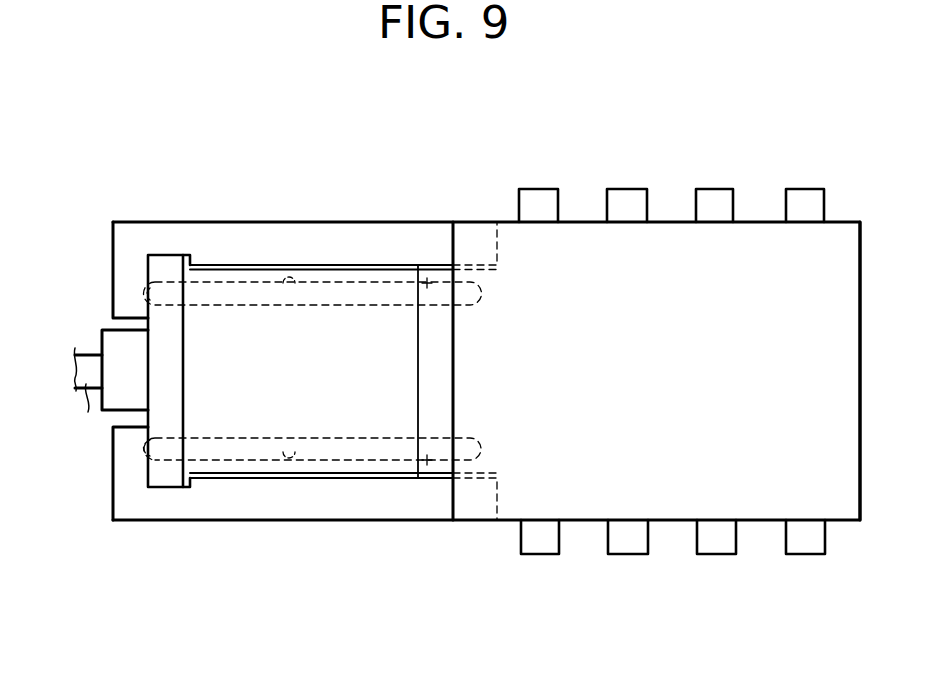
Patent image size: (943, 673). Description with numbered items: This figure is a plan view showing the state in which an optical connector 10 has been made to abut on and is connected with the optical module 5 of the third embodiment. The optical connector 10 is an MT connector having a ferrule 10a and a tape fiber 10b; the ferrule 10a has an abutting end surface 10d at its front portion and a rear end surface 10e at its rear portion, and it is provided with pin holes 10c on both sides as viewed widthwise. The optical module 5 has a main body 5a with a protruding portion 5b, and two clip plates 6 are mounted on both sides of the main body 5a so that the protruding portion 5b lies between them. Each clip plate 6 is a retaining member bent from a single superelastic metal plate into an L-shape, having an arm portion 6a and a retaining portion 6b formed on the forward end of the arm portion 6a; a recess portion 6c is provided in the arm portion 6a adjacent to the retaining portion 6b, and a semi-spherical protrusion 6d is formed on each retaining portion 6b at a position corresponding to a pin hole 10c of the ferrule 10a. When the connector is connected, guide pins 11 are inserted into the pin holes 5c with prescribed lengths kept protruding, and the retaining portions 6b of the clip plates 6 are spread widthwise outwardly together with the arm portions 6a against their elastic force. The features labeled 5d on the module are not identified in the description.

The optical module 5 is at (580, 222).
The main body 5a is at (755, 490).
The protruding portion 5b is at (433, 425).
The pin holes 5c is at (436, 262).
The external leads 5d is at (790, 195).
The clip plate 6 is at (403, 222).
The arm portion 6a is at (362, 250).
The retaining portion 6b is at (135, 245).
The recess portion 6c is at (169, 255).
The semi-spherical protrusion 6d is at (150, 296).
The optical connector 10 is at (265, 263).
The ferrule 10a is at (275, 410).
The tape fiber 10b is at (148, 447).
The pin holes 10c is at (287, 283).
The abutting end surface 10d is at (420, 388).
The rear end surface 10e is at (145, 323).
The guide pins 11 is at (330, 300).